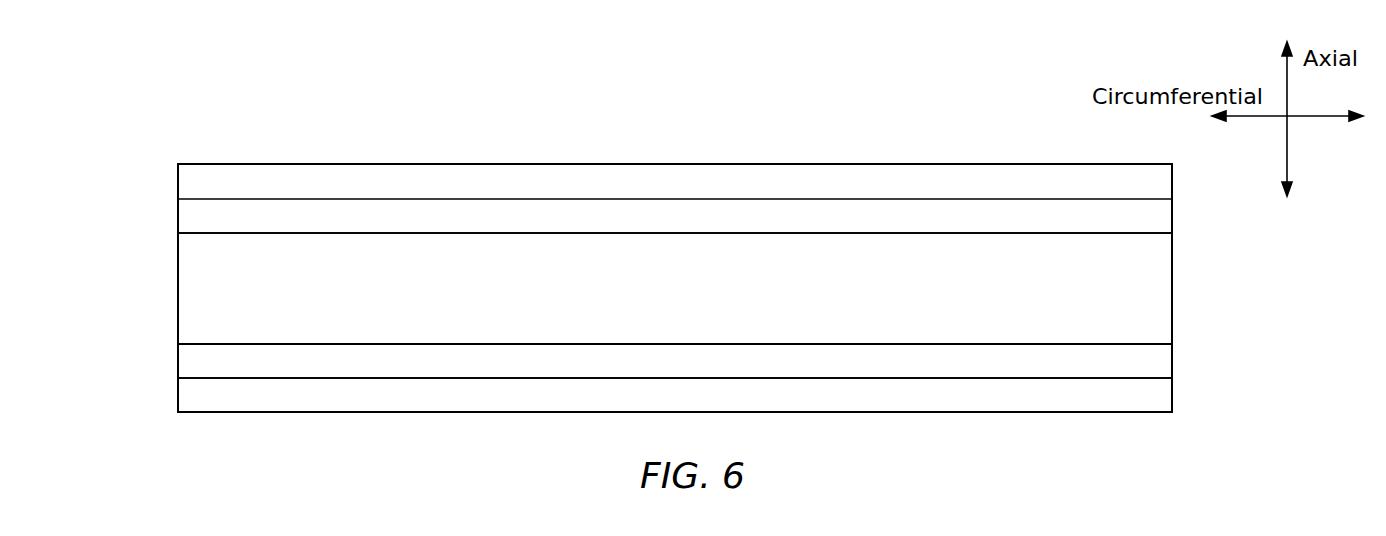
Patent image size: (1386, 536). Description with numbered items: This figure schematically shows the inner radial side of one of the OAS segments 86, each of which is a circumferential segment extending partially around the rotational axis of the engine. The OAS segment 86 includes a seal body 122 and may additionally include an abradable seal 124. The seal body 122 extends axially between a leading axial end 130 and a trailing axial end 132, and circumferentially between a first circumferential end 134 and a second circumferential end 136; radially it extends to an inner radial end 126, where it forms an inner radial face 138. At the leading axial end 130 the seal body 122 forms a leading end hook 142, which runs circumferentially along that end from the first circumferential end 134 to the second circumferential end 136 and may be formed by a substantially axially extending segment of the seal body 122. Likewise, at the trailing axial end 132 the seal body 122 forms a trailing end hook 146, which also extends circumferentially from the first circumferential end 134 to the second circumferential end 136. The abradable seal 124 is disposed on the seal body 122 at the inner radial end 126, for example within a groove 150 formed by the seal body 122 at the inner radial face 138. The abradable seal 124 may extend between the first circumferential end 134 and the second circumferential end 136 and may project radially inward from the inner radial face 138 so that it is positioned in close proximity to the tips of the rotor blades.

The OAS segment 86 is at (784, 136).
The leading axial end 130 is at (580, 163).
The leading end hook 142 is at (995, 183).
The second circumferential end 136 is at (1173, 255).
The groove 150 is at (898, 244).
The abradable seal 124 is at (1127, 288).
The first circumferential end 134 is at (178, 288).
The inner radial face 138 is at (888, 363).
The inner radial end 126 is at (428, 376).
The trailing end hook 146 is at (802, 393).
The seal body 122 is at (983, 386).
The trailing axial end 132 is at (1118, 413).